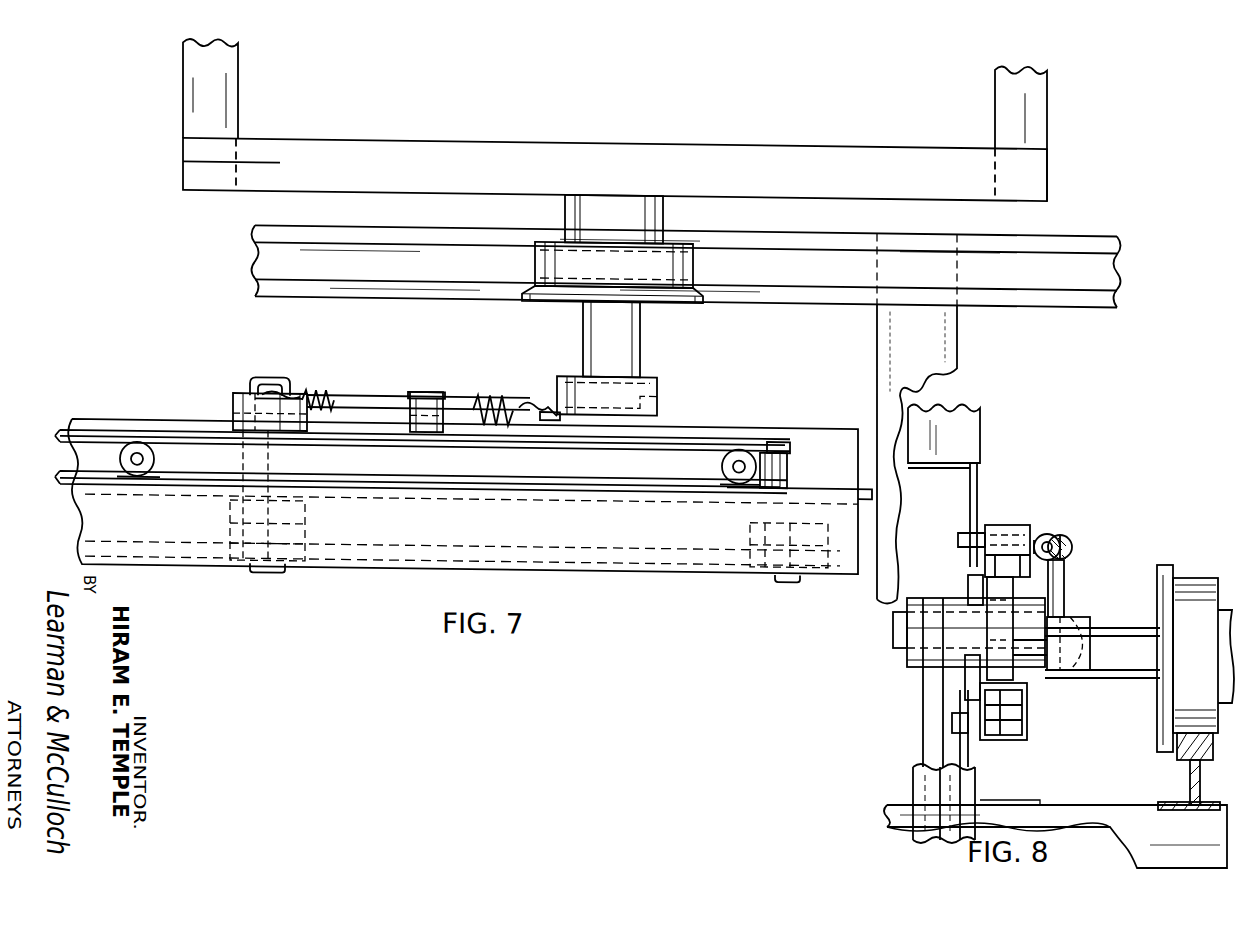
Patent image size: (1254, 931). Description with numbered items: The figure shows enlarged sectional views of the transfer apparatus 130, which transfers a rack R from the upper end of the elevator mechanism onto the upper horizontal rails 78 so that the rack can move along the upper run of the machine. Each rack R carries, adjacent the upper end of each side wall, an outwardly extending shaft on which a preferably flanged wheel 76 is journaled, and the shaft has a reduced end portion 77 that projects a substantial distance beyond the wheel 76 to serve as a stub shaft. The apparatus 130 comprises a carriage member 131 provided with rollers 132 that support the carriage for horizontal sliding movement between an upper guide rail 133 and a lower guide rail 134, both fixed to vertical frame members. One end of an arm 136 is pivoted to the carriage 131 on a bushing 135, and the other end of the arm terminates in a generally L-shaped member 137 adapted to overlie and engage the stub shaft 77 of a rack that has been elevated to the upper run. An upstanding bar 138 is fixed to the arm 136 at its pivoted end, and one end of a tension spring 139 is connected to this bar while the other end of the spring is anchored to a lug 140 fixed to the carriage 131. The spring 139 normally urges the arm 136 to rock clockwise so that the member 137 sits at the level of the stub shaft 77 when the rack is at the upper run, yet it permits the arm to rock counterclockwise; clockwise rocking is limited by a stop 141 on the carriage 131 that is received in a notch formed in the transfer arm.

In FIG. 7, the rack R is at (1074, 120).
In FIG. 7, the flanged wheel 76 is at (696, 246).
In FIG. 8, the flanged wheel 76 is at (1200, 580).
In FIG. 7, the reduced end portion 77 is at (618, 349).
In FIG. 8, the reduced end portion 77 is at (1110, 645).
In FIG. 7, the horizontal rail 78 is at (1087, 247).
In FIG. 8, the horizontal rail 78 is at (1175, 757).
In FIG. 7, the transfer apparatus 130 is at (701, 383).
In FIG. 7, the carriage member 131 is at (448, 463).
In FIG. 8, the carriage member 131 is at (1010, 660).
In FIG. 7, the rollers 132 is at (160, 478).
In FIG. 8, the rollers 132 is at (968, 575).
In FIG. 7, the upper guide rail 133 is at (91, 426).
In FIG. 8, the upper guide rail 133 is at (1002, 528).
In FIG. 8, the lower guide rail 134 is at (1005, 740).
In FIG. 7, the bushing 135 is at (232, 401).
In FIG. 7, the arm 136 is at (465, 389).
In FIG. 7, the L-shaped member 137 is at (657, 397).
In FIG. 8, the L-shaped member 137 is at (1090, 690).
In FIG. 7, the upstanding bar 138 is at (243, 392).
In FIG. 8, the upstanding bar 138 is at (1077, 563).
In FIG. 7, the tension spring 139 is at (322, 391).
In FIG. 8, the tension spring 139 is at (1065, 533).
In FIG. 7, the lug 140 is at (550, 408).
In FIG. 8, the lug 140 is at (1072, 574).
In FIG. 7, the stop 141 is at (420, 389).
In FIG. 8, the stop 141 is at (1040, 662).